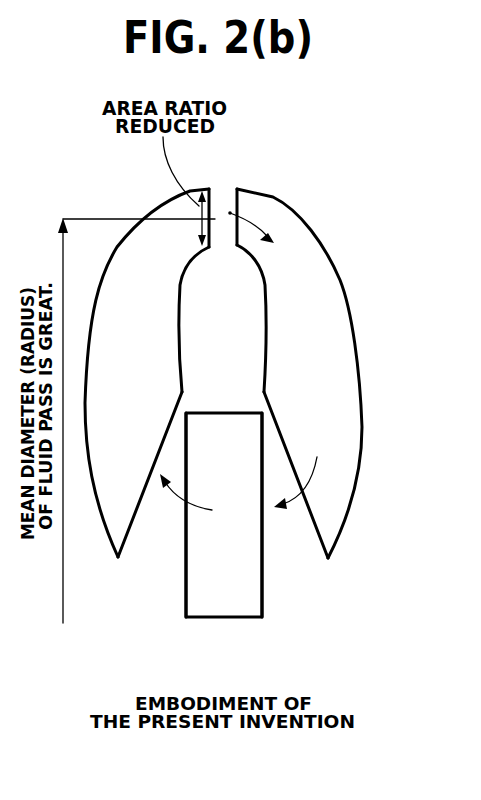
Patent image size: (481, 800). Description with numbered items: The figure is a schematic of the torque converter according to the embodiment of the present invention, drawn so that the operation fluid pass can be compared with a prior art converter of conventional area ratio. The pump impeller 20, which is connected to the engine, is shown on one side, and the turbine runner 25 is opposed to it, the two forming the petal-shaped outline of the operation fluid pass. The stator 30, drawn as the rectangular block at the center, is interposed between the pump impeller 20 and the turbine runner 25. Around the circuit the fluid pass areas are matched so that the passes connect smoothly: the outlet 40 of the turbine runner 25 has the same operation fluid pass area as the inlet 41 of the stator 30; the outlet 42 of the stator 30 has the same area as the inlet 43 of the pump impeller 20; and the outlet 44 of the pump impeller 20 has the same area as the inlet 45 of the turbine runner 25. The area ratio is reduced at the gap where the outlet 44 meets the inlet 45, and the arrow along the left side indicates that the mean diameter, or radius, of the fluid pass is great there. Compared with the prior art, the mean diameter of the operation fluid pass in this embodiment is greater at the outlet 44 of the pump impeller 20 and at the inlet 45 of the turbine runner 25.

The pump impeller 20 is at (112, 250).
The turbine runner 25 is at (360, 318).
The stator 30 is at (240, 627).
The outlet of the turbine runner 40 is at (282, 460).
The inlet of the stator 41 is at (267, 525).
The outlet of the stator 42 is at (182, 532).
The inlet of the pump impeller 43 is at (145, 507).
The outlet of the pump impeller 44 is at (224, 207).
The inlet of the turbine runner 45 is at (223, 215).